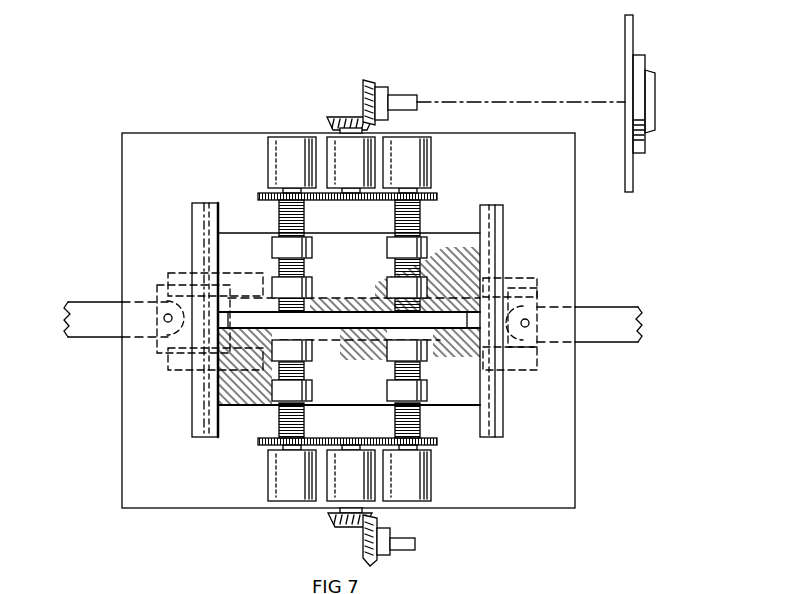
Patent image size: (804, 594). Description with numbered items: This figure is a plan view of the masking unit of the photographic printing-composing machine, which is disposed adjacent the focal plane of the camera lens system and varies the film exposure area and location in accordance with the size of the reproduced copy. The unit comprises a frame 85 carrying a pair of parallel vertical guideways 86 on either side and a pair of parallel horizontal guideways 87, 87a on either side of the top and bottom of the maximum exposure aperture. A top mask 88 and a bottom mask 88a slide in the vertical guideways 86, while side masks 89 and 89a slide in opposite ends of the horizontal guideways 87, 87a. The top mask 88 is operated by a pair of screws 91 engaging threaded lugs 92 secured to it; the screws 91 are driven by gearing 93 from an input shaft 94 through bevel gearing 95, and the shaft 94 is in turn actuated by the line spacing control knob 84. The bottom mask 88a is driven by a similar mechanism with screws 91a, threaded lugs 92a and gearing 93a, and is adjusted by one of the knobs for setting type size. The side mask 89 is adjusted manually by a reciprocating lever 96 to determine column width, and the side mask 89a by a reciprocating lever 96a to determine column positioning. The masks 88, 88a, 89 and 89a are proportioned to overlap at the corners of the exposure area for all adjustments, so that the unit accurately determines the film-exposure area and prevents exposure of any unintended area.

The line spacing control knob 84 is at (649, 127).
The frame 85 is at (566, 179).
The vertical guideways 86 is at (207, 203).
The horizontal guideways 87 is at (532, 262).
The horizontal guideway 87a is at (180, 272).
The top mask 88 is at (242, 246).
The bottom mask 88a is at (236, 406).
The side mask 89 is at (538, 349).
The side mask 89a is at (157, 302).
The screws 91 is at (297, 226).
The screws 91a is at (280, 425).
The threaded lugs 92 is at (385, 279).
The threaded lugs 92a is at (388, 393).
The gearing 93 is at (265, 194).
The gearing 93a is at (340, 438).
The input shaft 94 is at (393, 101).
The bevel gearing 95 is at (365, 116).
The reciprocating lever 96 is at (613, 322).
The reciprocating lever 96a is at (93, 311).